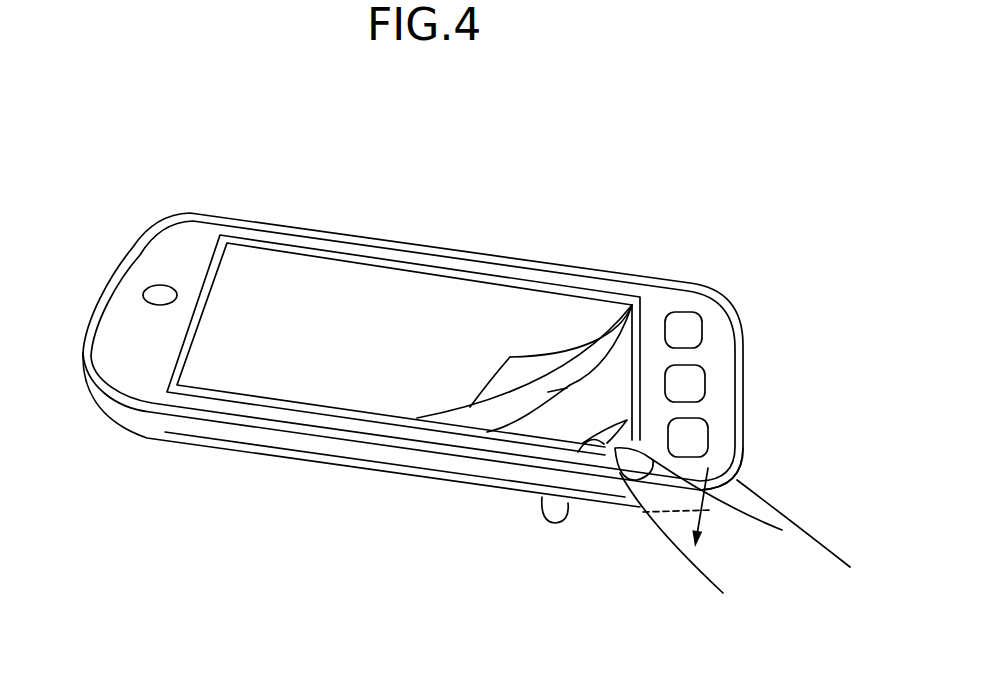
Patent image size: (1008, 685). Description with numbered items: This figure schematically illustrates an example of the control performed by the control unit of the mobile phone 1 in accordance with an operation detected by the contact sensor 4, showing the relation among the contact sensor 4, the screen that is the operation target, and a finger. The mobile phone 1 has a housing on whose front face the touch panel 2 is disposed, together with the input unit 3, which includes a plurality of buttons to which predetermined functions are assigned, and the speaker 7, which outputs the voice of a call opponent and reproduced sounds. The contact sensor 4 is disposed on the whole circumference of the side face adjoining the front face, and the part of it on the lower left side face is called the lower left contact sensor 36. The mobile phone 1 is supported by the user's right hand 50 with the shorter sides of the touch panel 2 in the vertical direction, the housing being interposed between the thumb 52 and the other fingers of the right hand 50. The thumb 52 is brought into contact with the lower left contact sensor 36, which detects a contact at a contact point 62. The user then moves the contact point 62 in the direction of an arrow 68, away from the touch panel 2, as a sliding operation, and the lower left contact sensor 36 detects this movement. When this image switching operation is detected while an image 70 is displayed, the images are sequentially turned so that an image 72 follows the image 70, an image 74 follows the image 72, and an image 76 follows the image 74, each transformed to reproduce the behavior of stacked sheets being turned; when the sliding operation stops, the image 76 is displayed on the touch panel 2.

The mobile phone 1 is at (479, 178).
The touch panel 2 is at (497, 293).
The input unit 3 is at (705, 383).
The contact sensor 4 is at (199, 437).
The speaker 7 is at (153, 291).
The lower left contact sensor 36 is at (743, 483).
The right hand 50 is at (763, 565).
The thumb 52 is at (653, 482).
The contact point 62 is at (688, 508).
The arrow 68 is at (700, 520).
The image 70 is at (512, 380).
The image 72 is at (548, 392).
The image 74 is at (575, 445).
The image 76 is at (607, 452).